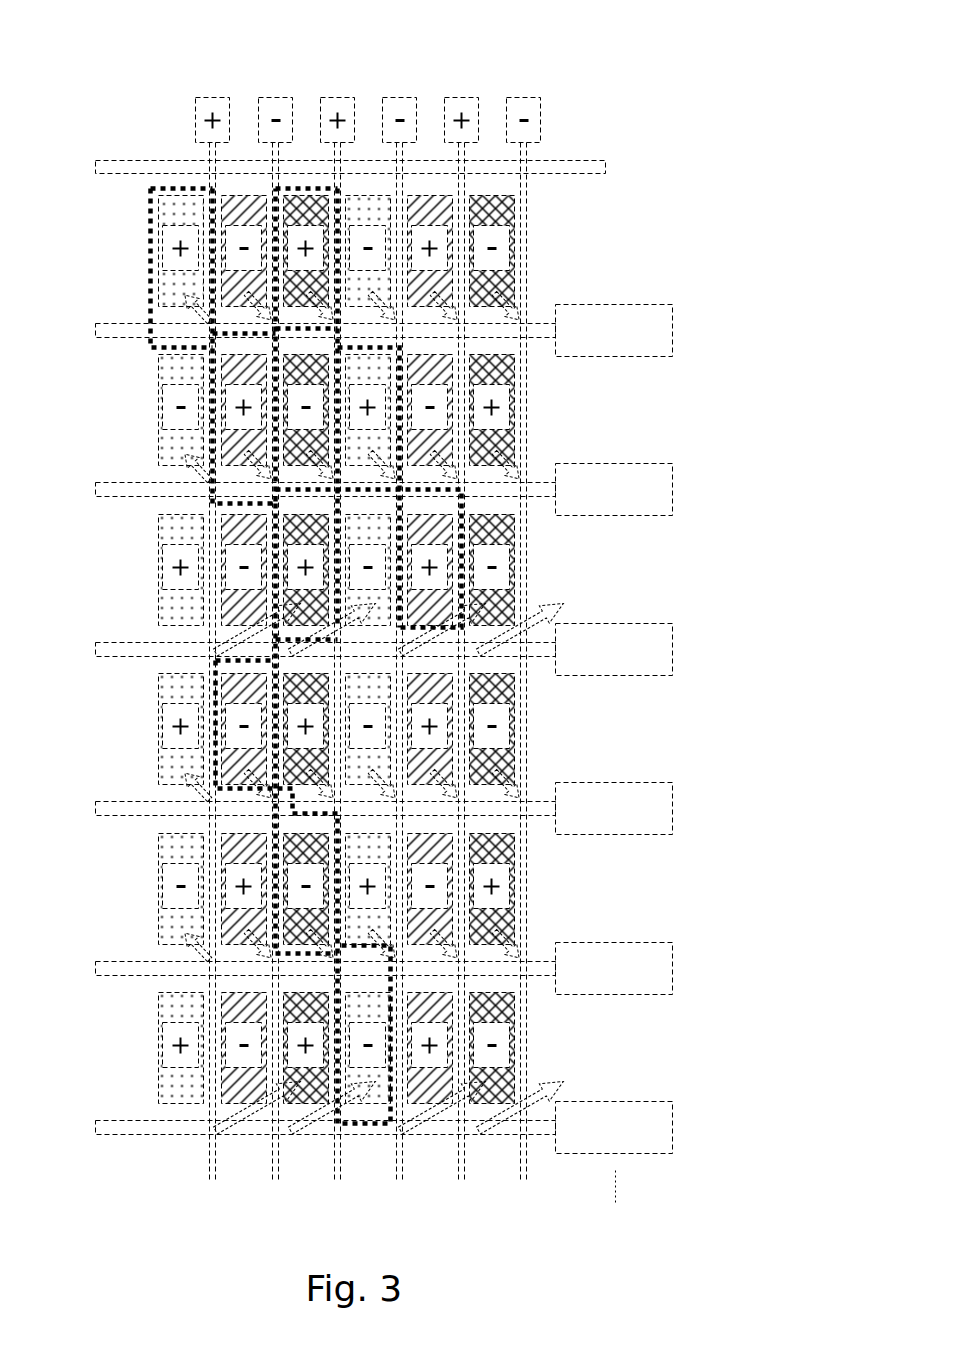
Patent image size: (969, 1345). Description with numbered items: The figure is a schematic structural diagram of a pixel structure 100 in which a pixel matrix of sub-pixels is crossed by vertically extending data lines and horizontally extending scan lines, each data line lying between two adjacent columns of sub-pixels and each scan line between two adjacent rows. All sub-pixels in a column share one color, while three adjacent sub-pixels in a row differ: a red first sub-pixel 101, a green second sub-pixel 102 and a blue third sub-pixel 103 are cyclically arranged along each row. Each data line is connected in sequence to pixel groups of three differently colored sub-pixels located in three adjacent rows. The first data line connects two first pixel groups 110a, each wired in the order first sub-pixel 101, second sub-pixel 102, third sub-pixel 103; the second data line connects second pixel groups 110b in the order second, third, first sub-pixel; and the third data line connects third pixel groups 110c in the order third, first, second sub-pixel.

The pixel structure 100 is at (198, 30).
The first sub-pixel 101 is at (150, 190).
The second sub-pixel 102 is at (222, 225).
The third sub-pixel 103 is at (275, 283).
The first pixel group 110a is at (150, 347).
The second pixel group 110b is at (212, 795).
The third pixel group 110c is at (462, 492).